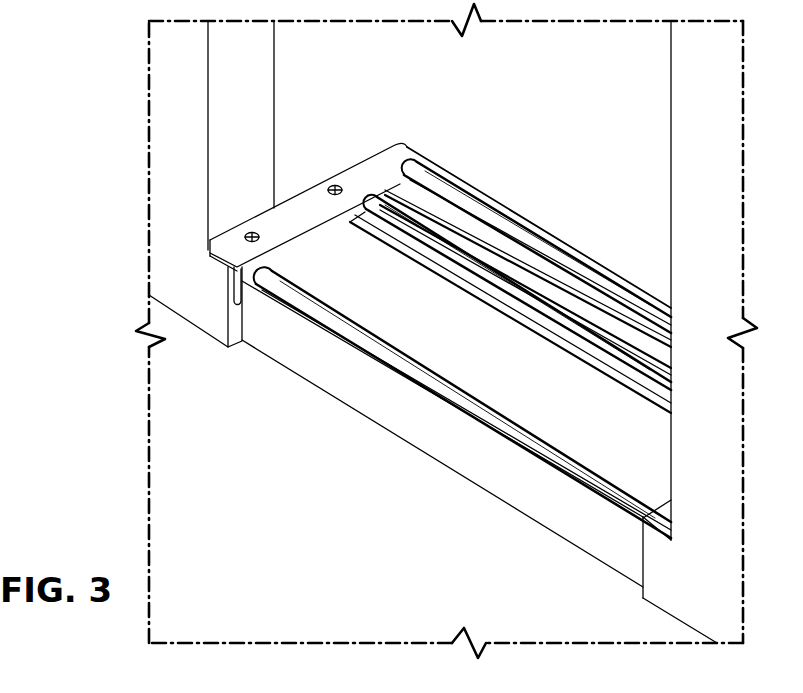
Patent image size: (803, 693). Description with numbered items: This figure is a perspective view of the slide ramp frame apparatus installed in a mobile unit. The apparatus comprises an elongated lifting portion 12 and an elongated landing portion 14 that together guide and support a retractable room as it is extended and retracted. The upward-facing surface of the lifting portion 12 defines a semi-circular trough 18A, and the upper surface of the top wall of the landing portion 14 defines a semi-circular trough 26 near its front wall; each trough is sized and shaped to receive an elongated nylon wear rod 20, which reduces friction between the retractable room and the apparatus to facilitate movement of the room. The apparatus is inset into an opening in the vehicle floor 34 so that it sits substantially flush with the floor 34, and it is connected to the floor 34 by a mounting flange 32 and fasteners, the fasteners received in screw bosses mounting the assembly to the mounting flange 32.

The lifting portion 12 is at (527, 272).
The landing portion 14 is at (529, 395).
The semi-circular trough 18A is at (418, 175).
The nylon wear rod 20 is at (450, 250).
The semi-circular trough 26 is at (640, 510).
The mounting flange 32 is at (303, 208).
The floor 34 is at (623, 131).